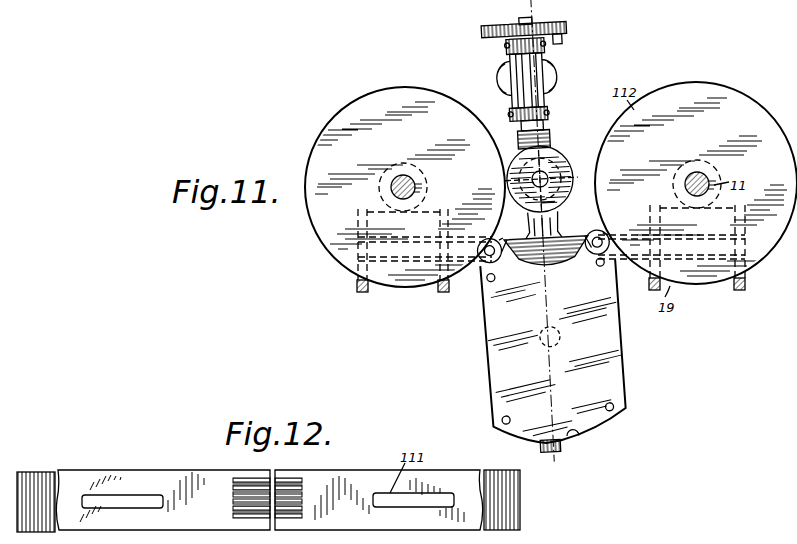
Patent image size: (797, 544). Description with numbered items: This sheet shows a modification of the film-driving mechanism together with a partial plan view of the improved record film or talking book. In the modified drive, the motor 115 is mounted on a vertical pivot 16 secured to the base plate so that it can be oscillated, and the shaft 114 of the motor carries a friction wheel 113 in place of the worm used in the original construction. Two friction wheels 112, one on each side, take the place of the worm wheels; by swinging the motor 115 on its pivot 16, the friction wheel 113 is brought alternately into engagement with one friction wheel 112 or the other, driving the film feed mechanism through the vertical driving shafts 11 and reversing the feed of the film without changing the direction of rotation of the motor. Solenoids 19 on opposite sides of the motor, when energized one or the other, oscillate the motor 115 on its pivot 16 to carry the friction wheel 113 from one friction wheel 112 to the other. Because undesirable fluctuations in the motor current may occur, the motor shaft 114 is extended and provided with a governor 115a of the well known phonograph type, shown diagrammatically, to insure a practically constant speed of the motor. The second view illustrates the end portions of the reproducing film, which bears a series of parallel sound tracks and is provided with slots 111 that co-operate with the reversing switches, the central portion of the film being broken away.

In FIG. 11, the vertical driving shaft 11 is at (420, 187).
In FIG. 11, the vertical pivot 16 is at (548, 343).
In FIG. 11, the solenoids 19 is at (372, 290).
In FIG. 12, the slots 111 is at (107, 495).
In FIG. 11, the friction wheels 112 is at (472, 115).
In FIG. 11, the friction wheel 113 is at (555, 152).
In FIG. 11, the shaft 114 is at (563, 223).
In FIG. 11, the motor 115 is at (538, 262).
In FIG. 11, the governor 115a is at (552, 75).